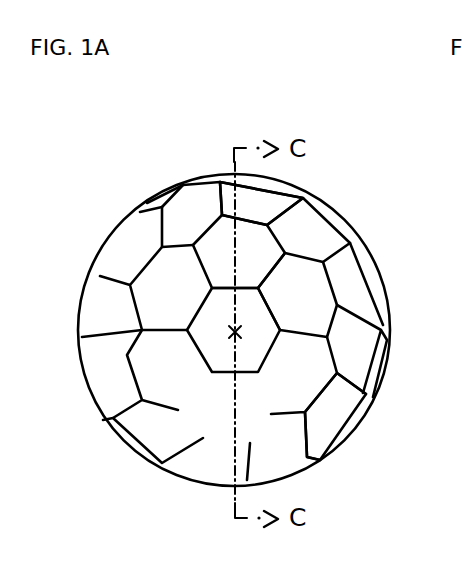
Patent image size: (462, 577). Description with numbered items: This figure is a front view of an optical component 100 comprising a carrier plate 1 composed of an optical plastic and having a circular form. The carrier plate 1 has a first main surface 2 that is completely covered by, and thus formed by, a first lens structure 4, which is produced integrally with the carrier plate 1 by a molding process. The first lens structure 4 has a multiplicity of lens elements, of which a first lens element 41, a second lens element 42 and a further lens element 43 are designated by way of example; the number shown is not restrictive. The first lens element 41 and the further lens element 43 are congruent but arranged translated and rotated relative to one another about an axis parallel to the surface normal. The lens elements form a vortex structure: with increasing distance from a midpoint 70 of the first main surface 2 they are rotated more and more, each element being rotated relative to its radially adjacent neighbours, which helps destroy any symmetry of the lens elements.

The optical component 100 is at (284, 92).
The carrier plate 1 is at (148, 467).
The first main surface 2 is at (337, 417).
The first lens structure 4 is at (335, 416).
The first lens element 41 is at (256, 234).
The second lens element 42 is at (227, 192).
The further lens element 43 is at (310, 294).
The midpoint 70 is at (228, 333).